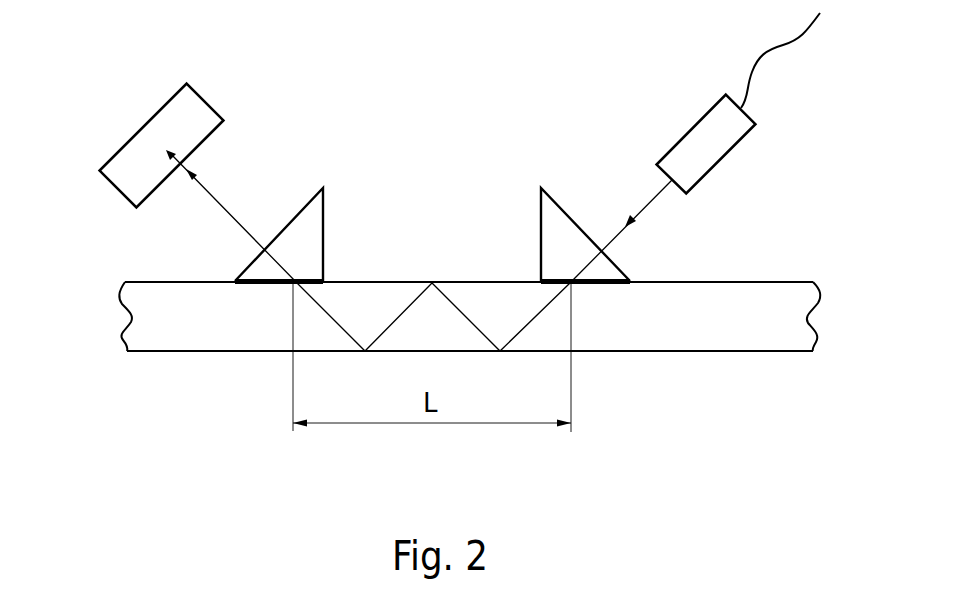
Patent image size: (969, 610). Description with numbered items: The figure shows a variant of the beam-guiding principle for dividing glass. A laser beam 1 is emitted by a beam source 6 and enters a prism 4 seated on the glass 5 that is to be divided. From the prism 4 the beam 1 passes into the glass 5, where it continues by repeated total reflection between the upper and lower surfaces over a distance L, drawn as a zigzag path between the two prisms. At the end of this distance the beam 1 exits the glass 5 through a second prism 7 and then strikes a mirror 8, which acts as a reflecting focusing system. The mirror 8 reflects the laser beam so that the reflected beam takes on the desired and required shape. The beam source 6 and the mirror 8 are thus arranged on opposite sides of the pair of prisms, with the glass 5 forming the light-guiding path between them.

The laser beam 1 is at (650, 203).
The prism 4 is at (555, 242).
The glass 5 is at (748, 320).
The beam source 6 is at (698, 153).
The second prism 7 is at (307, 233).
The mirror 8 is at (181, 122).